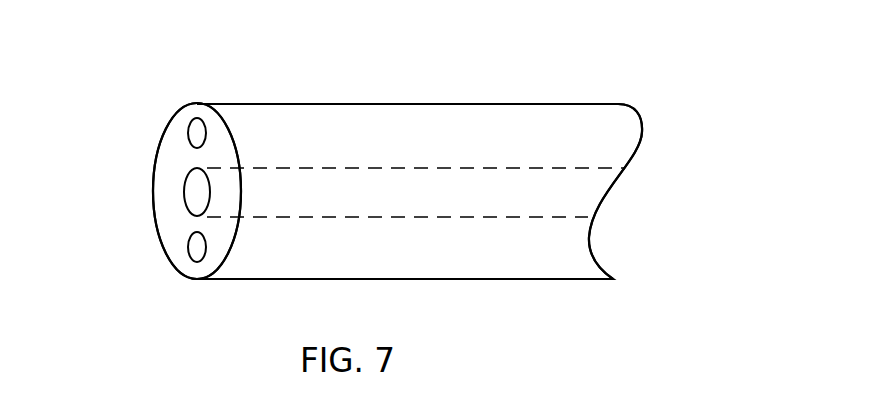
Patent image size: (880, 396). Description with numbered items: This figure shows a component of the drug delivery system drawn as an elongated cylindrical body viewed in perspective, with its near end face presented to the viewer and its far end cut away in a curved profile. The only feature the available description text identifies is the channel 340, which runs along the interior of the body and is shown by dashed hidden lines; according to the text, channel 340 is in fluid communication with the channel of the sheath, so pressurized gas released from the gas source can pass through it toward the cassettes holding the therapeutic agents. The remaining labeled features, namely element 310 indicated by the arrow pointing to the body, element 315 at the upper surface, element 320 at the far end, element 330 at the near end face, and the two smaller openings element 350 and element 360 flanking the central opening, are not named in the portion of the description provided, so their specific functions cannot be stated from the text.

The catheter shaft 310 is at (483, 81).
The outer surface 315 is at (325, 103).
The distal end 320 is at (645, 205).
The proximal end face 330 is at (137, 195).
The channel 340 is at (443, 193).
The lower side lumen 350 is at (191, 250).
The upper side lumen 360 is at (192, 133).